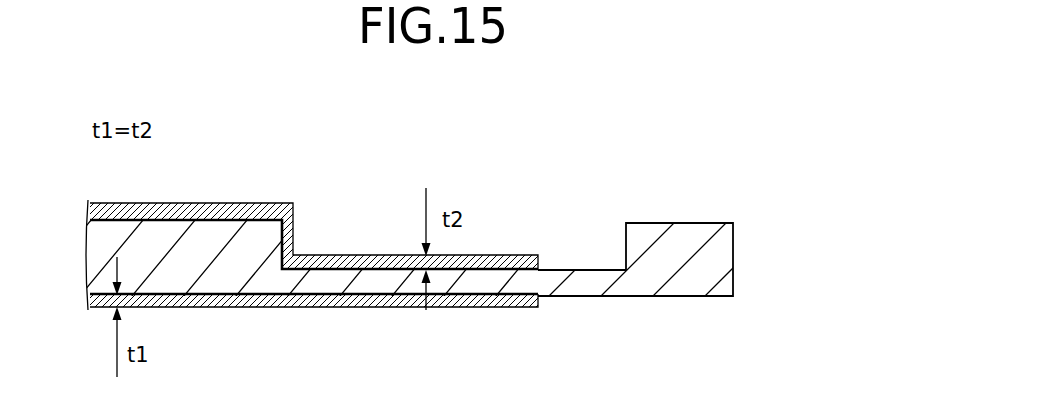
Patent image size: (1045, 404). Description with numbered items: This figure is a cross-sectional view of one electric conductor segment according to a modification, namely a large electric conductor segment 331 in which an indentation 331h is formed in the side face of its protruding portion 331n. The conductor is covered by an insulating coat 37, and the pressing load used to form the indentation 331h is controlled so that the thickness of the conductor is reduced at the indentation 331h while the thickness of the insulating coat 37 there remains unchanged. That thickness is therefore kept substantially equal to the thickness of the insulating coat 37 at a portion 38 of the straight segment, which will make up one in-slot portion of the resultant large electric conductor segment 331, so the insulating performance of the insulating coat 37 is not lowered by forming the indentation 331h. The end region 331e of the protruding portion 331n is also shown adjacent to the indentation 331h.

The insulating coat 37 is at (361, 255).
The portion of the straight electric conductor segment 38 is at (192, 233).
The large electric conductor segment 331 is at (647, 220).
The indentation 331h is at (568, 270).
The end face 331e is at (733, 256).
The protruding portion 331n is at (677, 296).